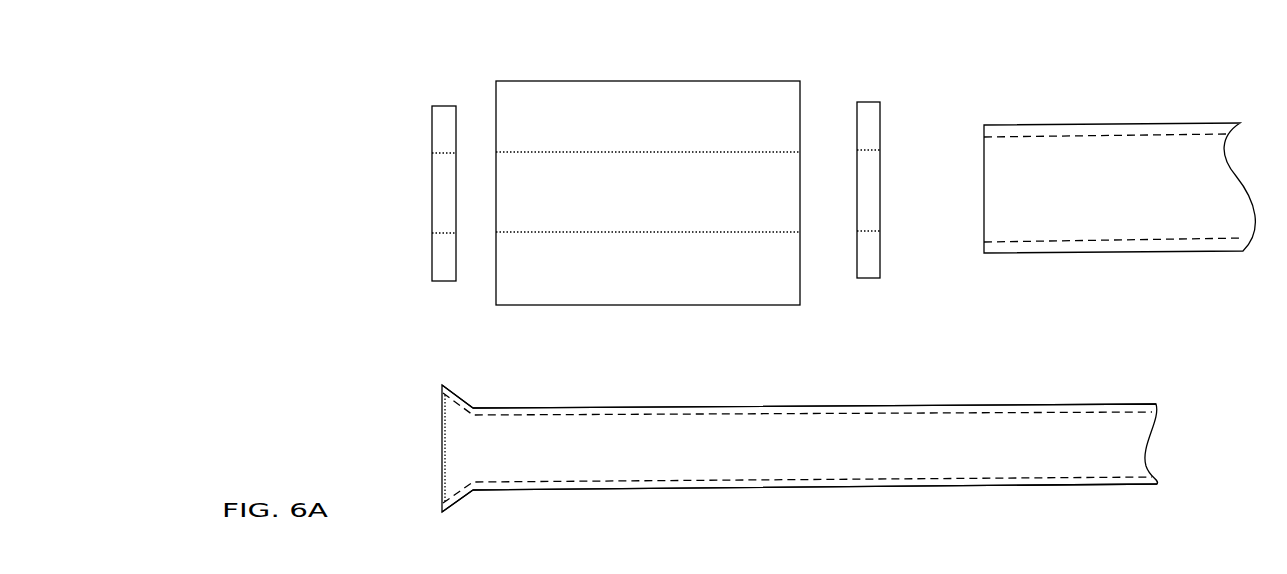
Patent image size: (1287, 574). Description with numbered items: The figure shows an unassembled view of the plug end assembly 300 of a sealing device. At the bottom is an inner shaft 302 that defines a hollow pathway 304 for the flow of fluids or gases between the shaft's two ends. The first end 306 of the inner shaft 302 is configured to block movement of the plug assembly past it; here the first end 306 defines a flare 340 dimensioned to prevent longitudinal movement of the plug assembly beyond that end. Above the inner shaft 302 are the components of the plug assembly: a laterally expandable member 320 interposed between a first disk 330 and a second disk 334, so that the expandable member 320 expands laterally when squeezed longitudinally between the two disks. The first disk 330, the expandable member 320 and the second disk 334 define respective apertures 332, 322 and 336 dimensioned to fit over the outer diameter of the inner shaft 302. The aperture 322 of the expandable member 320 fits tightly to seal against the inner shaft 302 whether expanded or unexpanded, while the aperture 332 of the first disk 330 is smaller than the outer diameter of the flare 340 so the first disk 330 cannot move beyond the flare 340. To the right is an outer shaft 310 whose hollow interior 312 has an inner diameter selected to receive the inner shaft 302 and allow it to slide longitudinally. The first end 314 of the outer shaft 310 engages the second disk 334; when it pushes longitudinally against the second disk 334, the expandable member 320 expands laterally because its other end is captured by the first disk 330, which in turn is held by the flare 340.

The plug end assembly 300 is at (314, 134).
The inner shaft 302 is at (627, 408).
The hollow pathway 304 is at (754, 447).
The first end 306 is at (411, 449).
The outer shaft 310 is at (1072, 124).
The hollow interior 312 is at (1089, 205).
The first end 314 is at (974, 164).
The laterally expandable member 320 is at (623, 81).
The aperture 322 is at (592, 192).
The first disk 330 is at (447, 105).
The aperture 332 is at (440, 193).
The second disk 334 is at (863, 102).
The aperture 336 is at (873, 190).
The flare 340 is at (458, 499).